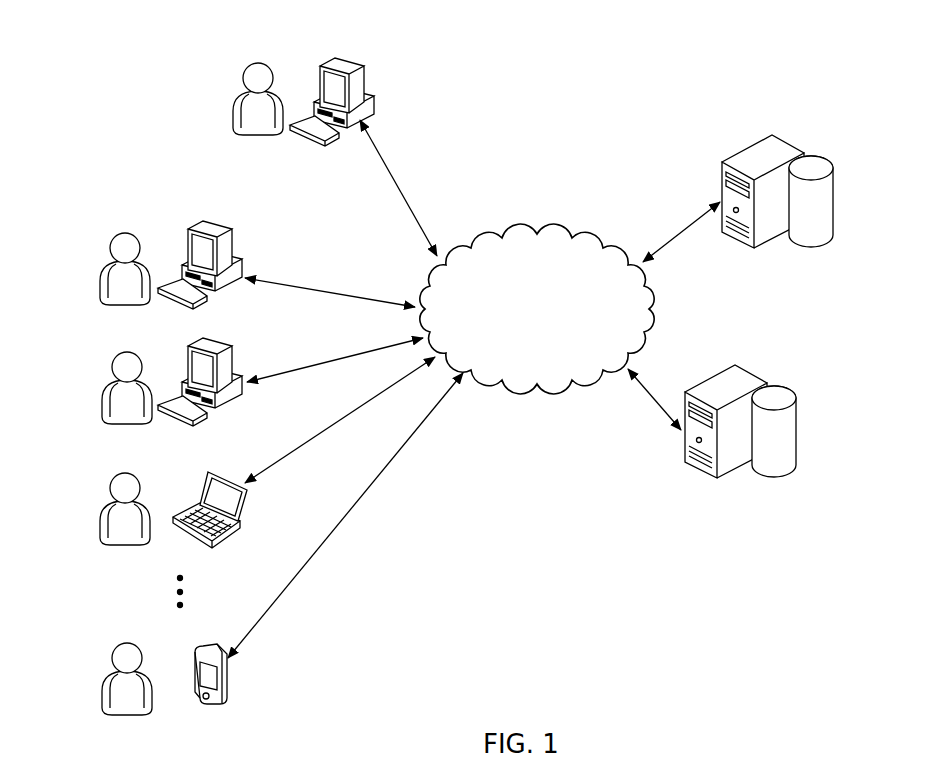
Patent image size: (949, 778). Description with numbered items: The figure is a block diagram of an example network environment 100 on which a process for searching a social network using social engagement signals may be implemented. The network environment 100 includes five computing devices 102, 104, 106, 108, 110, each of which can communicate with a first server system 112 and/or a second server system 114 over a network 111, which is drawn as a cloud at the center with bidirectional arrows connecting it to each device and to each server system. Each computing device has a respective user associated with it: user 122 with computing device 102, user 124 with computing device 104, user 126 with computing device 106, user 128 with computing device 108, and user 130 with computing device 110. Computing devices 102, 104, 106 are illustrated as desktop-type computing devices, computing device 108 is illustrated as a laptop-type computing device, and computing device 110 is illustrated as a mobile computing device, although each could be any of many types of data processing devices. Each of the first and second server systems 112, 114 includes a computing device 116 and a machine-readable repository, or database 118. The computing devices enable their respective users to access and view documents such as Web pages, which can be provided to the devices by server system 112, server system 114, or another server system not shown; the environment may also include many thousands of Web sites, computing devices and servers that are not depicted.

The network environment 100 is at (624, 114).
The computing device 102 is at (340, 91).
The computing device 104 is at (206, 228).
The computing device 106 is at (208, 372).
The laptop-type computing device 108 is at (210, 472).
The mobile computing device 110 is at (196, 648).
The network 111 is at (551, 226).
The first server system 112 is at (727, 254).
The second server system 114 is at (691, 481).
The computing device 116 is at (748, 380).
The database 118 is at (797, 430).
The user 122 is at (232, 99).
The user 124 is at (113, 257).
The user 126 is at (116, 377).
The user 128 is at (115, 499).
The user 130 is at (116, 668).